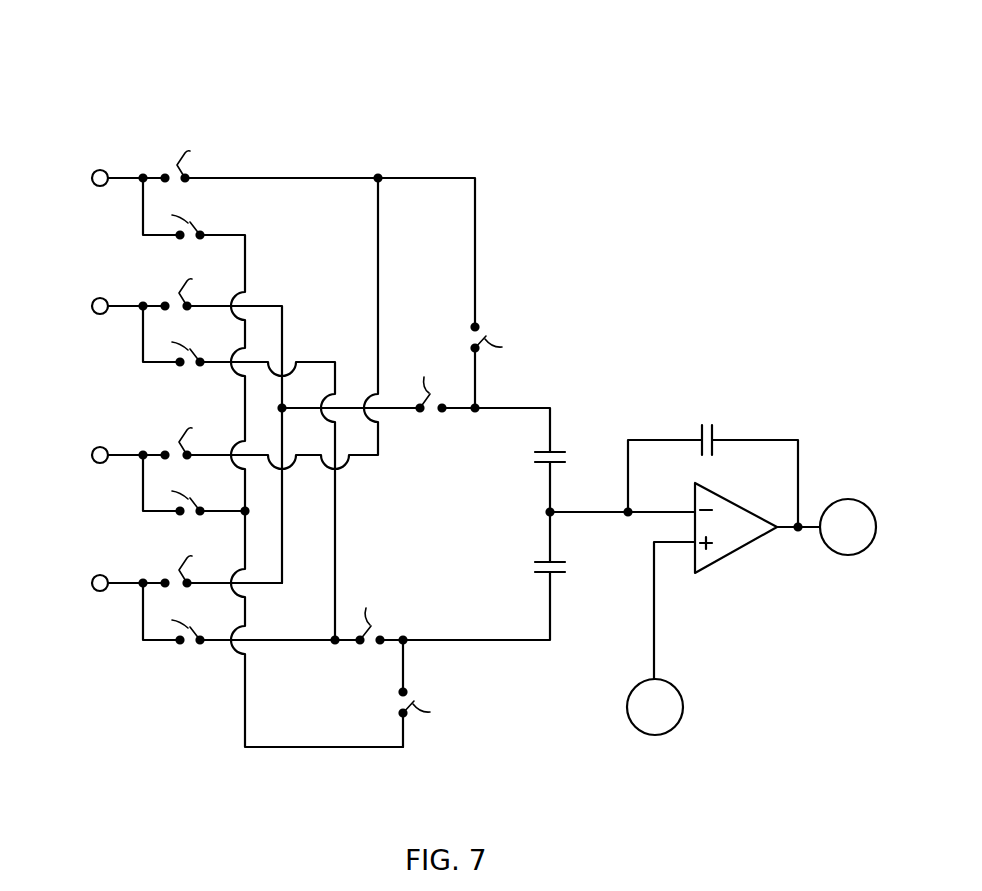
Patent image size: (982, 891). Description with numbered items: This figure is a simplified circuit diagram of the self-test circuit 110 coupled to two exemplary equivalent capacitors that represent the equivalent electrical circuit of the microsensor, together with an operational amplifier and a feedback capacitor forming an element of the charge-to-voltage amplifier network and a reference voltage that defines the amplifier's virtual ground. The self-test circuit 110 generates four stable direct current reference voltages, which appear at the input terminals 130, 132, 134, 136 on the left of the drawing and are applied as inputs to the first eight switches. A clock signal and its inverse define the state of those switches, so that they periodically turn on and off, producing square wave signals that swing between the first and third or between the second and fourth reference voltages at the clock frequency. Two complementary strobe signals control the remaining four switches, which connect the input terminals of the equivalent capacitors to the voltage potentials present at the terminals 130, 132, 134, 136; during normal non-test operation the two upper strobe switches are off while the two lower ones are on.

The self-test circuit 110 is at (500, 104).
The first input terminal V1 130 is at (97, 185).
The second input terminal V2 132 is at (97, 313).
The third input terminal V3 134 is at (97, 462).
The fourth input terminal V4 136 is at (97, 590).